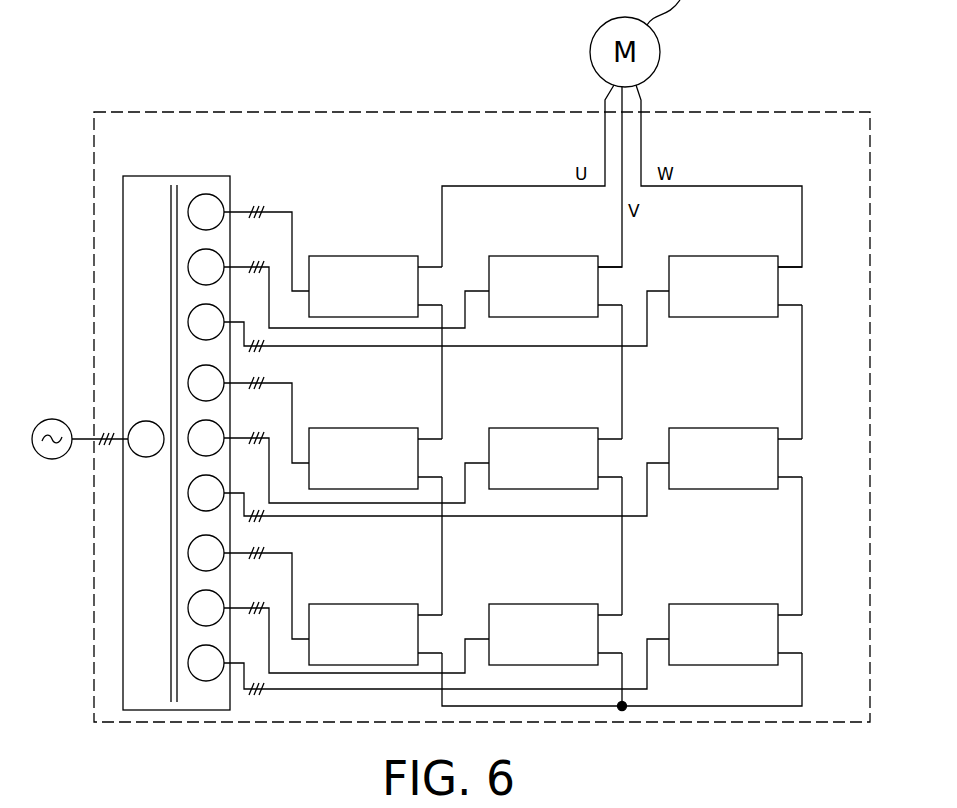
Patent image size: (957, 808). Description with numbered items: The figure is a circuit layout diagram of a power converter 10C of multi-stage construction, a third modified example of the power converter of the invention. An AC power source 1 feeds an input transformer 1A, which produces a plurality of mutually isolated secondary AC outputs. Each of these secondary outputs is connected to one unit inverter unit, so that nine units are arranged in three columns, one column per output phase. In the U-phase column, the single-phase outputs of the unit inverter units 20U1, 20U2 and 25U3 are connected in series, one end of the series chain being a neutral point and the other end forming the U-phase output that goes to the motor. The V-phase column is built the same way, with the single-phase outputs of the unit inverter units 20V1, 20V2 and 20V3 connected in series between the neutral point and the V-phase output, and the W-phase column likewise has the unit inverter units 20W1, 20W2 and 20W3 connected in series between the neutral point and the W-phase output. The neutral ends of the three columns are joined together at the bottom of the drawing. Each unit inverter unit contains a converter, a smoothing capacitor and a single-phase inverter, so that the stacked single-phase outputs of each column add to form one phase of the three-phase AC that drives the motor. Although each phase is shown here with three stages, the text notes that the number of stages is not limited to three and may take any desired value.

The AC power source 1 is at (53, 420).
The input transformer 1A is at (175, 175).
The power converter of multi-stage construction 10C is at (367, 112).
The unit inverter unit 20U1 is at (357, 256).
The unit inverter unit 20U2 is at (357, 428).
The unit inverter unit 25U3 is at (357, 604).
The unit inverter unit 20V1 is at (537, 256).
The unit inverter unit 20V2 is at (537, 428).
The unit inverter unit 20V3 is at (537, 604).
The unit inverter unit 20W1 is at (717, 256).
The unit inverter unit 20W2 is at (717, 428).
The unit inverter unit 20W3 is at (717, 604).